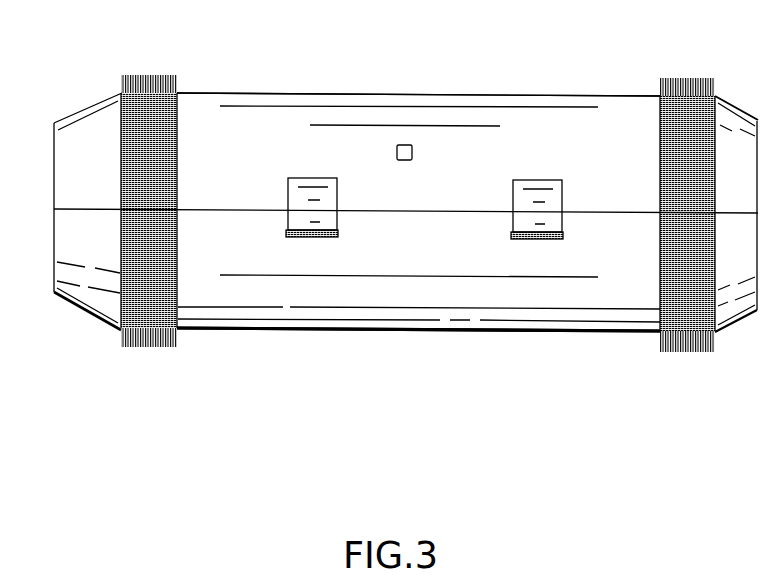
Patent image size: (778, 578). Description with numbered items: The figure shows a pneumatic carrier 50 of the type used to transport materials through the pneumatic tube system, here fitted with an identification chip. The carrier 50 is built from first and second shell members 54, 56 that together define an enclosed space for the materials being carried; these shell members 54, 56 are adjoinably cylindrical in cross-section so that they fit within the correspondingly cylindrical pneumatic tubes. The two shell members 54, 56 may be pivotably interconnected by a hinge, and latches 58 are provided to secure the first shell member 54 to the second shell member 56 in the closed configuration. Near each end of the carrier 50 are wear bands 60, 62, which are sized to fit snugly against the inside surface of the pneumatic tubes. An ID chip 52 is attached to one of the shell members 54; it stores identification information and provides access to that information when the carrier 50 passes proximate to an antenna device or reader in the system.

The carrier 50 is at (98, 97).
The ID chip 52 is at (404, 145).
The first shell member 54 is at (538, 123).
The second shell member 56 is at (558, 333).
The latches 58 is at (337, 218).
The wear band 60 is at (177, 337).
The wear band 62 is at (673, 352).